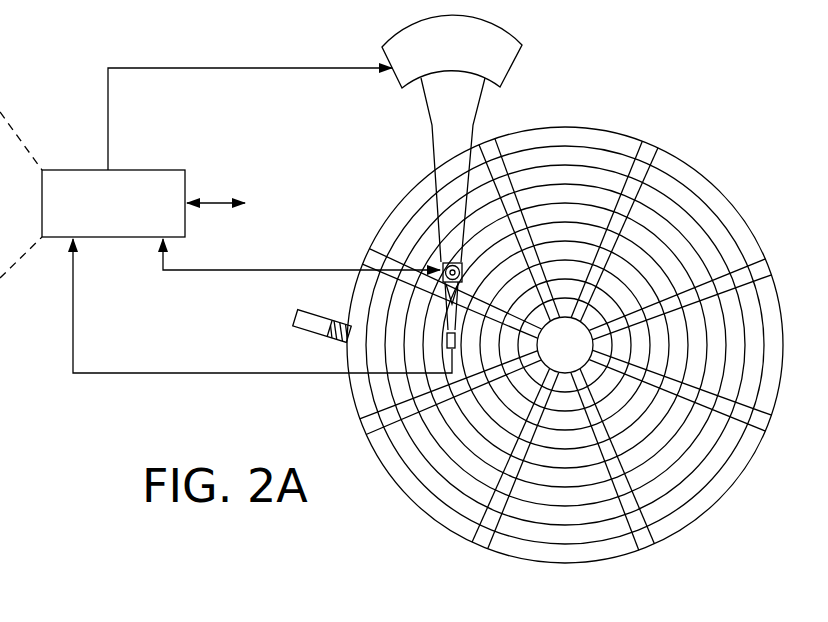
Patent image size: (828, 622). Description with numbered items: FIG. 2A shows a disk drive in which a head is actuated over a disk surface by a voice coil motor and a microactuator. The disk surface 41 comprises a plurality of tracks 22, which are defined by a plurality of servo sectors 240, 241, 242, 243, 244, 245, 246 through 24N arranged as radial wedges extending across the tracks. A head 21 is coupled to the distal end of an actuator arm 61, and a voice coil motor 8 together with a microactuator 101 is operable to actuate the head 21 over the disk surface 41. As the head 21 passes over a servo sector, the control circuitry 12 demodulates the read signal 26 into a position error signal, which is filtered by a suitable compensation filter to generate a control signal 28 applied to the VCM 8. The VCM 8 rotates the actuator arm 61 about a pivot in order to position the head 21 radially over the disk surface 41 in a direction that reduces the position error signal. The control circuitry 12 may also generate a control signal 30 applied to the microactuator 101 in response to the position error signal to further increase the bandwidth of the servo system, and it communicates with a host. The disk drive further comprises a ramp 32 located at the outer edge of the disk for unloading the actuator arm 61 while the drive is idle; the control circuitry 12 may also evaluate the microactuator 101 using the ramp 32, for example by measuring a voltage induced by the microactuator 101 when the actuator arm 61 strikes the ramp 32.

The disk surface 41 is at (718, 176).
The tracks 22 is at (572, 152).
The servo sector 240 is at (655, 144).
The servo sector 241 is at (770, 268).
The servo sector 242 is at (768, 426).
The servo sector 243 is at (642, 546).
The servo sector 244 is at (481, 543).
The servo sector 245 is at (366, 427).
The servo sector 246 is at (372, 258).
The servo sector 24N is at (487, 146).
The voice coil motor 8 is at (397, 77).
The actuator arm 61 is at (433, 153).
The microactuator 101 is at (465, 272).
The head 21 is at (446, 339).
The control circuitry 12 is at (150, 170).
The control signal 28 is at (108, 126).
The control signal 30 is at (266, 270).
The read signal 26 is at (212, 373).
The ramp 32 is at (310, 336).